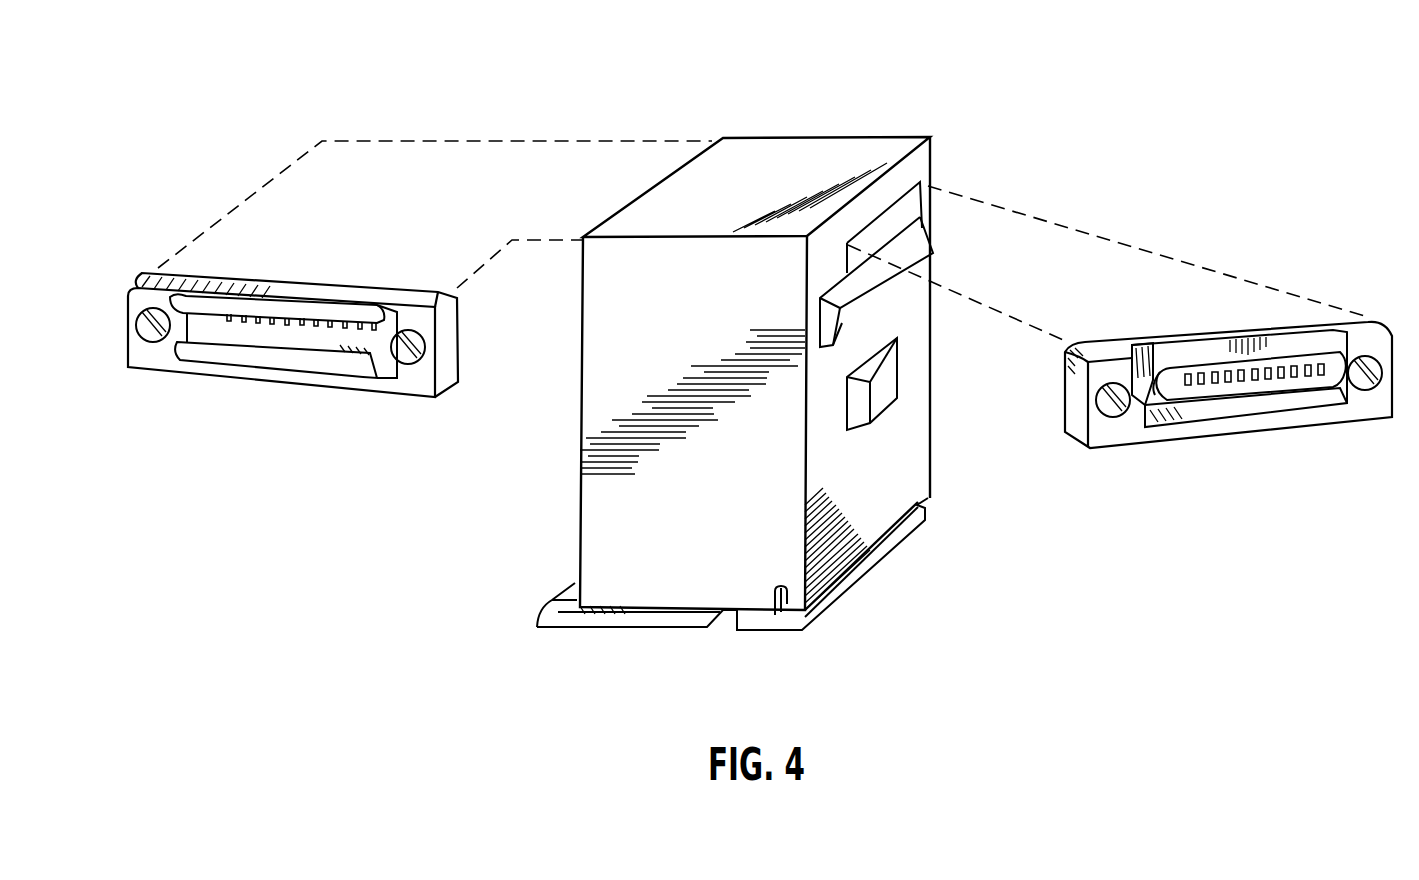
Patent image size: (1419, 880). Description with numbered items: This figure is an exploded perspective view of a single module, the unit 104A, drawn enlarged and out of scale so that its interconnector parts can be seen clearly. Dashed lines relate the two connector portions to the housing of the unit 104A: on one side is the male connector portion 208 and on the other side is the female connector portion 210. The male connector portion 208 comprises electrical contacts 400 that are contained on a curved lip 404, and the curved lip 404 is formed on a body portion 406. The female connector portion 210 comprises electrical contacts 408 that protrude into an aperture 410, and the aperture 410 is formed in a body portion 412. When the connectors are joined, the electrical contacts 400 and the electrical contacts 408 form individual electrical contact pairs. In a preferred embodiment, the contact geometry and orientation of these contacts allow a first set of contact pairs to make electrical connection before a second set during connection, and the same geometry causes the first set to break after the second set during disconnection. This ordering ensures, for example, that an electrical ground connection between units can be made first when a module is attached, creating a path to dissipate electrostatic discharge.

The unit 104A is at (812, 121).
The female connector portion 210 is at (153, 268).
The male connector portion 208 is at (1197, 303).
The electrical contacts 408 is at (300, 327).
The aperture 410 is at (213, 323).
The body portion 412 is at (417, 383).
The curved lip 404 is at (1327, 350).
The body portion 406 is at (1375, 347).
The electrical contacts 400 is at (1287, 382).